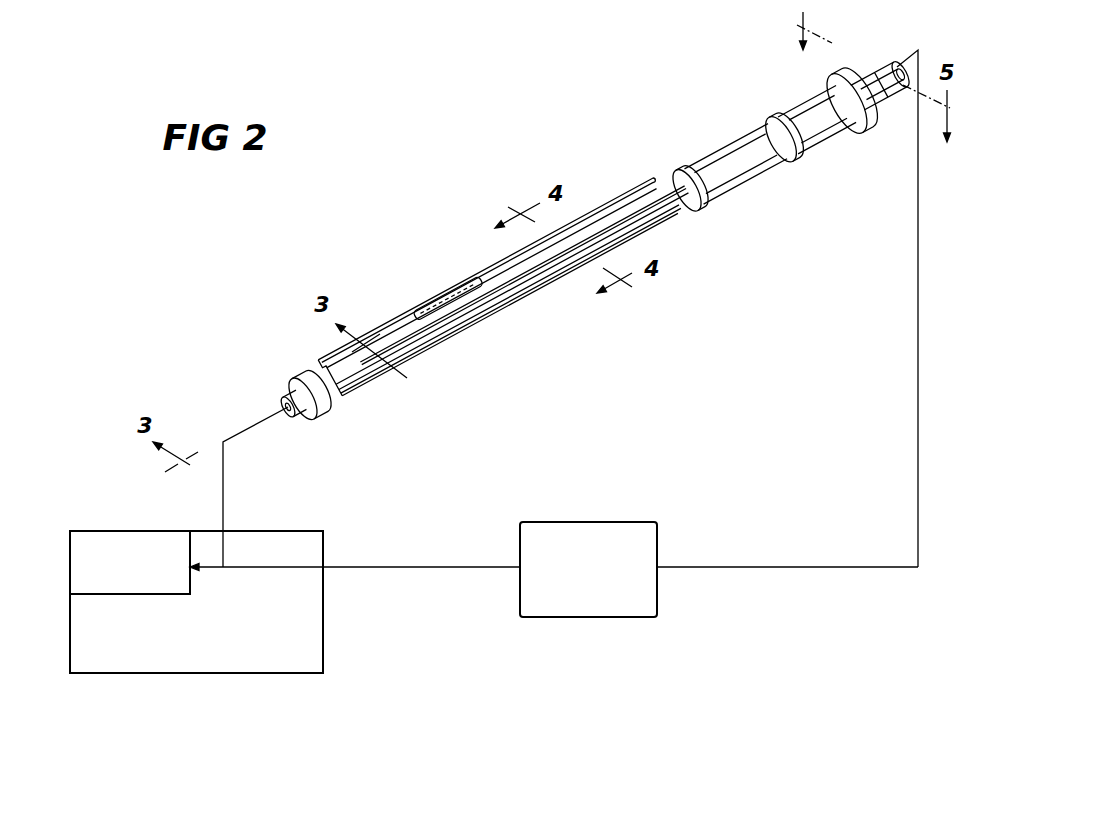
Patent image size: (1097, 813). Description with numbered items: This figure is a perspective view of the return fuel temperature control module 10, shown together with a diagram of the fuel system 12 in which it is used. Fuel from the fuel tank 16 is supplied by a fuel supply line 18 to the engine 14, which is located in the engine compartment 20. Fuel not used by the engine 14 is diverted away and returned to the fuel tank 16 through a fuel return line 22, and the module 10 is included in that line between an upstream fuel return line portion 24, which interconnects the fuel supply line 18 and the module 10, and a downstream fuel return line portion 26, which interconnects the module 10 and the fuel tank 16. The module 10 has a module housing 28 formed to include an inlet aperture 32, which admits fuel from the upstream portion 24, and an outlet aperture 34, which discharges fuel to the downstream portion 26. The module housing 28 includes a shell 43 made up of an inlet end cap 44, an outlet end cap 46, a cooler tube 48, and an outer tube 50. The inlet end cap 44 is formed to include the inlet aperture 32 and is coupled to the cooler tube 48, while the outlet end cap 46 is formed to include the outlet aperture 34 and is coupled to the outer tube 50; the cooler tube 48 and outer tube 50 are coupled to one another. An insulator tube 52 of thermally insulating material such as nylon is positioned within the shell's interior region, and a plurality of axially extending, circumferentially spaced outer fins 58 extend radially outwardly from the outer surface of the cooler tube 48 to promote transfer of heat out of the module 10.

The return fuel temperature control module 10 is at (510, 418).
The fuel system 12 is at (440, 186).
The engine 14 is at (124, 531).
The fuel tank 16 is at (600, 521).
The fuel supply line 18 is at (399, 565).
The engine compartment 20 is at (323, 655).
The fuel return line 22 is at (640, 398).
The upstream fuel return line portion 24 is at (223, 484).
The downstream fuel return line portion 26 is at (917, 372).
The module housing 28 is at (641, 178).
The inlet aperture 32 is at (282, 405).
The outlet aperture 34 is at (890, 60).
The shell 43 is at (697, 214).
The inlet end cap 44 is at (306, 378).
The outlet end cap 46 is at (838, 62).
The cooler tube 48 is at (507, 268).
The outer tube 50 is at (728, 150).
The insulator tube 52 is at (448, 310).
The outer fins 58 is at (493, 289).